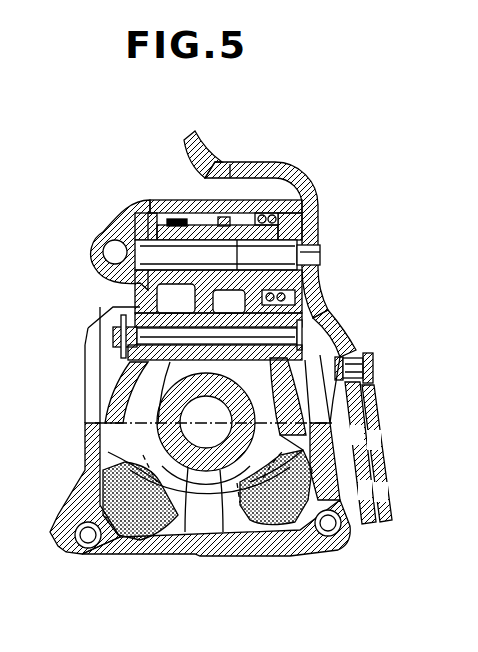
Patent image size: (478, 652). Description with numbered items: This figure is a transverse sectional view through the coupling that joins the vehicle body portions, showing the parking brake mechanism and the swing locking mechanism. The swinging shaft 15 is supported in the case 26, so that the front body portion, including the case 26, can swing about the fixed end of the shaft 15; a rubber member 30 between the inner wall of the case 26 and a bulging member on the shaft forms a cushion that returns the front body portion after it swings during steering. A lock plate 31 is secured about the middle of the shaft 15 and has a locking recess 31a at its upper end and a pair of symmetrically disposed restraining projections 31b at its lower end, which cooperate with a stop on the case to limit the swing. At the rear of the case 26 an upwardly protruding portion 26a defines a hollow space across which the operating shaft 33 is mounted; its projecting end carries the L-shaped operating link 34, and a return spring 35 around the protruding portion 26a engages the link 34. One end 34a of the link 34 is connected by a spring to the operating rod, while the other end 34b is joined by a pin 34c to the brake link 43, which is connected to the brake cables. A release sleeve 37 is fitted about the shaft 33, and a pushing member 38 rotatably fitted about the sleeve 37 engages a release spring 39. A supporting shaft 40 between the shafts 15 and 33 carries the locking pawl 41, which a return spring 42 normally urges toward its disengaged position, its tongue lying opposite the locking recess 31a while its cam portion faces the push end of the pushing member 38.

The swinging shaft 15 is at (165, 553).
The case 26 is at (272, 555).
The upwardly protruding portion 26a is at (152, 200).
The rubber member 30 is at (113, 552).
The lock plate 31 is at (145, 437).
The locking recess 31a is at (112, 393).
The restraining projections 31b is at (120, 472).
The operating shaft 33 is at (320, 252).
The operating link 34 is at (274, 162).
The one end of operating link 34a is at (196, 134).
The other end of operating link 34b is at (350, 332).
The pin 34c is at (375, 367).
The return spring 35 is at (300, 207).
The release sleeve 37 is at (230, 164).
The pushing member 38 is at (128, 291).
The release spring 39 is at (174, 212).
The supporting shaft 40 is at (112, 333).
The locking pawl 41 is at (220, 360).
The return spring 42 is at (160, 370).
The brake link 43 is at (378, 413).